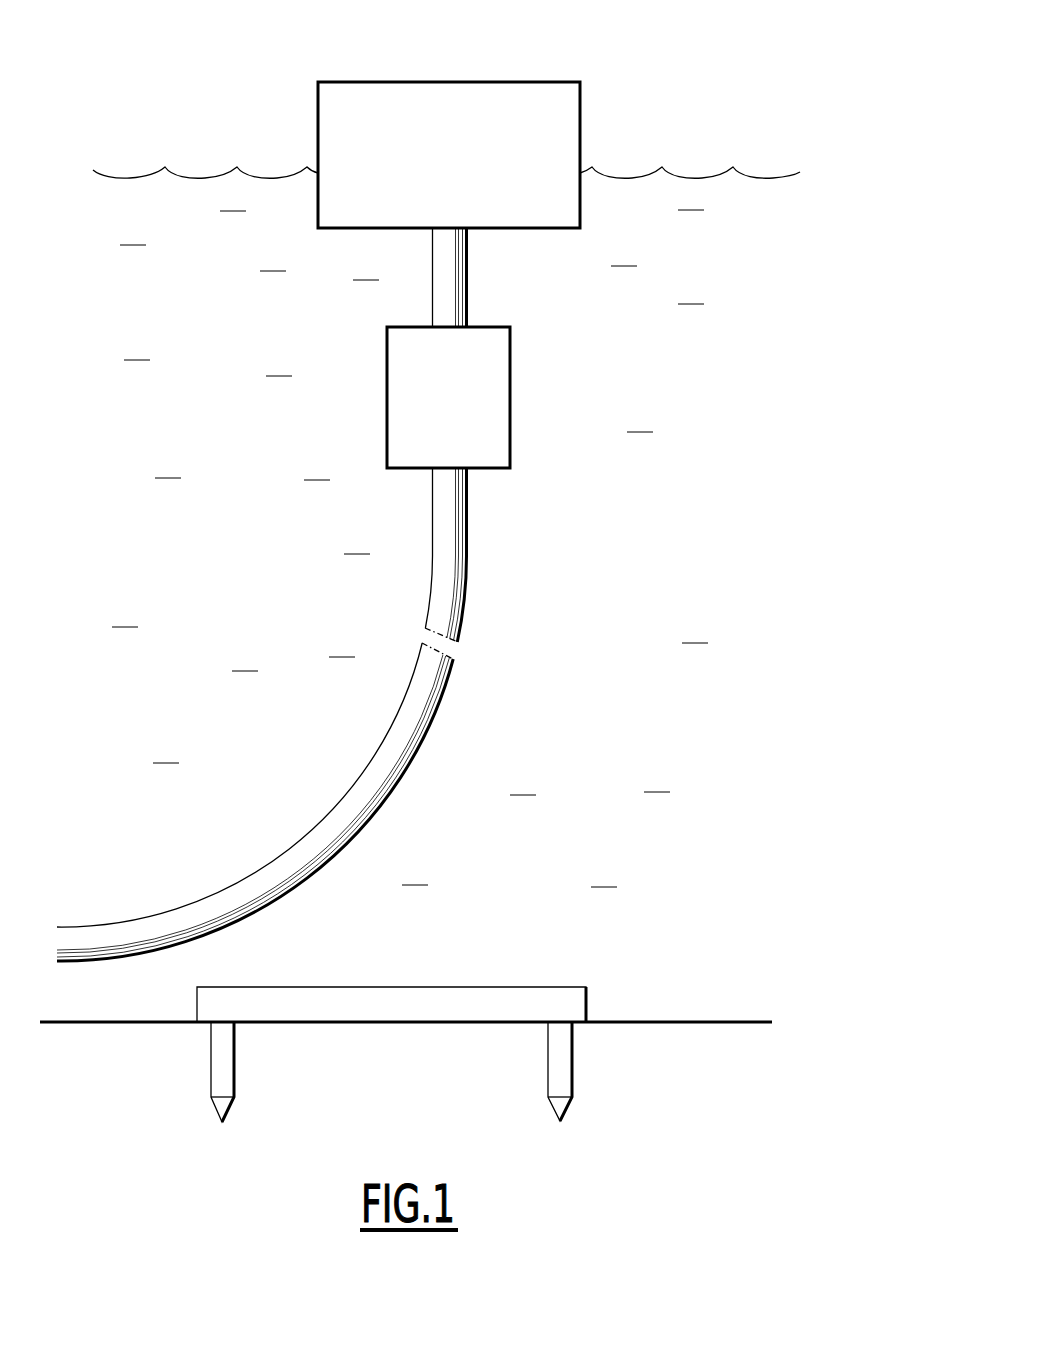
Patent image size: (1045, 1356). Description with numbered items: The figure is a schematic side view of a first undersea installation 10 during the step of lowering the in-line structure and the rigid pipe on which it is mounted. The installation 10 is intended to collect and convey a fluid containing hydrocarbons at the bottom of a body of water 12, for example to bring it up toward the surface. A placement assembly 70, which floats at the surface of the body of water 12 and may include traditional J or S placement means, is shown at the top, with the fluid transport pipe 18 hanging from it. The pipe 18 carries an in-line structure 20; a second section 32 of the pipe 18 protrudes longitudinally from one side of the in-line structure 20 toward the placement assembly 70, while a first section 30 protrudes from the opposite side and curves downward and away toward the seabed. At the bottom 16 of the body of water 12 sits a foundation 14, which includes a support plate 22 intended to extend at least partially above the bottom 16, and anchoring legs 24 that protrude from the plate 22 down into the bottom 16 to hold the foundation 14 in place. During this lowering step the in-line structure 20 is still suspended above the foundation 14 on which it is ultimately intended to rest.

The undersea installation 10 is at (661, 488).
The body of water 12 is at (446, 527).
The foundation 14 is at (426, 1048).
The bottom of the body of water 16 is at (735, 1036).
The fluid transport pipe 18 is at (500, 589).
The in-line structure 20 is at (500, 401).
The support plate 22 is at (476, 992).
The anchoring legs 24 is at (213, 1080).
The first section 30 is at (455, 519).
The second section 32 is at (456, 281).
The placement assembly 70 is at (553, 90).